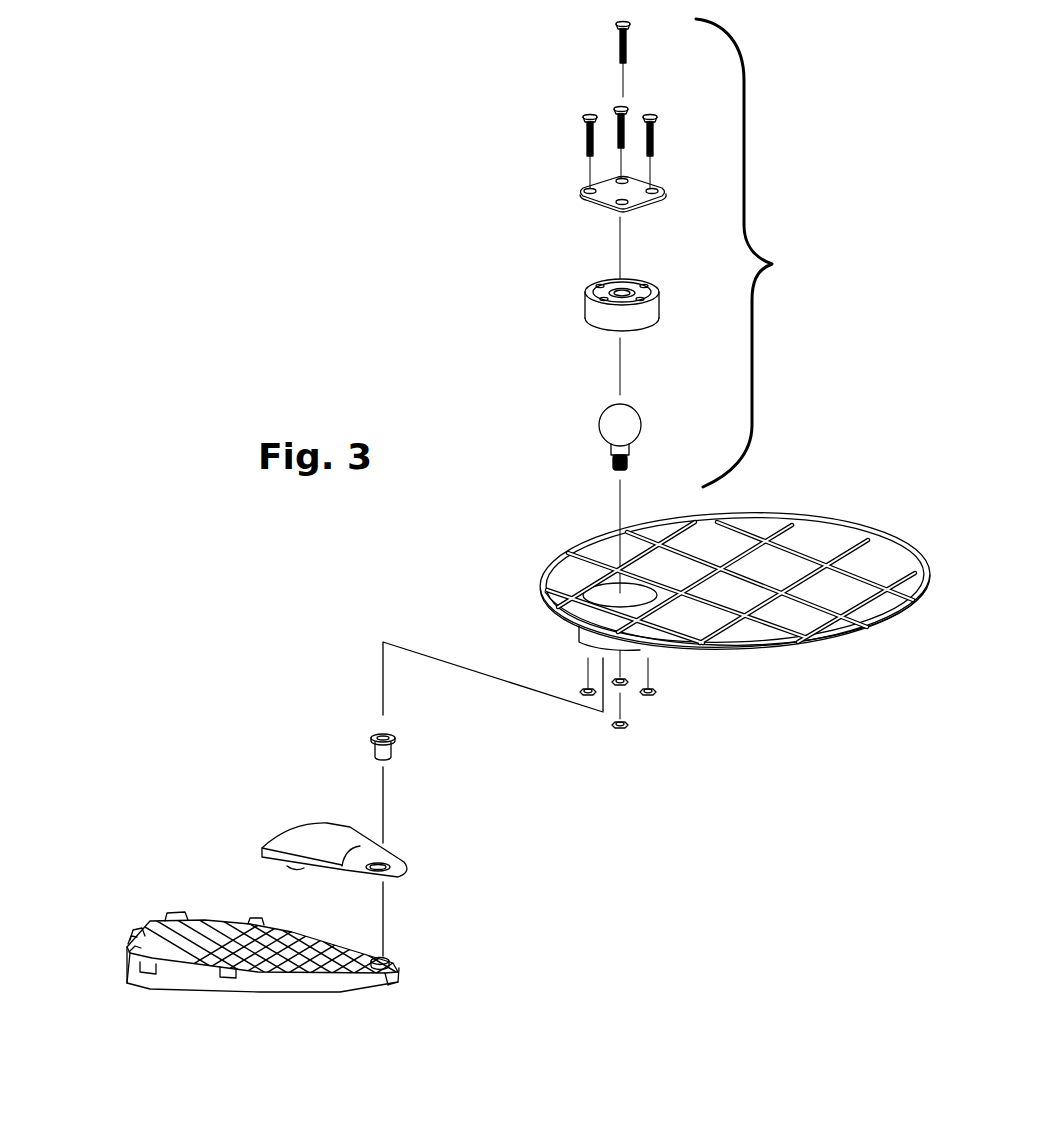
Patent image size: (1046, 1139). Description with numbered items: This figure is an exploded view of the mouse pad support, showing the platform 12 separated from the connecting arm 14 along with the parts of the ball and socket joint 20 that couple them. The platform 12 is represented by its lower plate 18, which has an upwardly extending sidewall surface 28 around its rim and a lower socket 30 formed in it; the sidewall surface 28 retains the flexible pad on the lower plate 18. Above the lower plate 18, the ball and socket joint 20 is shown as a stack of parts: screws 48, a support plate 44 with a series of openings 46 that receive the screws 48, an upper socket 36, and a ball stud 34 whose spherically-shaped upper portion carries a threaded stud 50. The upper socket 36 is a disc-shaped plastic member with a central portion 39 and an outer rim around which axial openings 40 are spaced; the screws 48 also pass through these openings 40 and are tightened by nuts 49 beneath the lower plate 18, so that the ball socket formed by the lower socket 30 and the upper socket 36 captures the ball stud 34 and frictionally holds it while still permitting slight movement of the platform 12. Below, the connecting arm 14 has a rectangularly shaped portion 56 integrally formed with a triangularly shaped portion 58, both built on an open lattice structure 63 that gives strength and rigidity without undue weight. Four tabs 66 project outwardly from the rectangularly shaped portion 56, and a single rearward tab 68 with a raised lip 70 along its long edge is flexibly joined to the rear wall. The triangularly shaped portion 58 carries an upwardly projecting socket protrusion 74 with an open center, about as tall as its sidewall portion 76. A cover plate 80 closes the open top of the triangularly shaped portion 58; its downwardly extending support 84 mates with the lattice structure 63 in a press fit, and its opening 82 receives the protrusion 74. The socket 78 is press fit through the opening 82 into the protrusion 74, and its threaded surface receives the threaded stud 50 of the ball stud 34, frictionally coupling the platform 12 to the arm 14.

The platform 12 is at (684, 576).
The connecting arm 14 is at (310, 959).
The lower plate 18 is at (787, 550).
The ball and socket joint 20 is at (749, 253).
The sidewall surface 28 is at (838, 642).
The lower socket 30 is at (600, 597).
The ball stud 34 is at (612, 430).
The upper socket 36 is at (615, 320).
The central portion 39 is at (588, 287).
The axial openings 40 is at (597, 305).
The support plate 44 is at (589, 172).
The openings 46 is at (588, 188).
The screws 48 is at (648, 113).
The nuts 49 is at (613, 681).
The threaded stud 50 is at (632, 462).
The rectangularly shaped portion 56 is at (193, 910).
The triangularly shaped portion 58 is at (352, 1002).
The open lattice structure 63 is at (165, 926).
The tabs 66 is at (143, 966).
The tab 68 is at (133, 932).
The raised lip 70 is at (137, 940).
The socket protrusion 74 is at (386, 967).
The sidewall portion 76 is at (385, 985).
The socket 78 is at (395, 750).
The cover plate 80 is at (352, 824).
The opening 82 is at (402, 866).
The downwardly extending support 84 is at (295, 869).